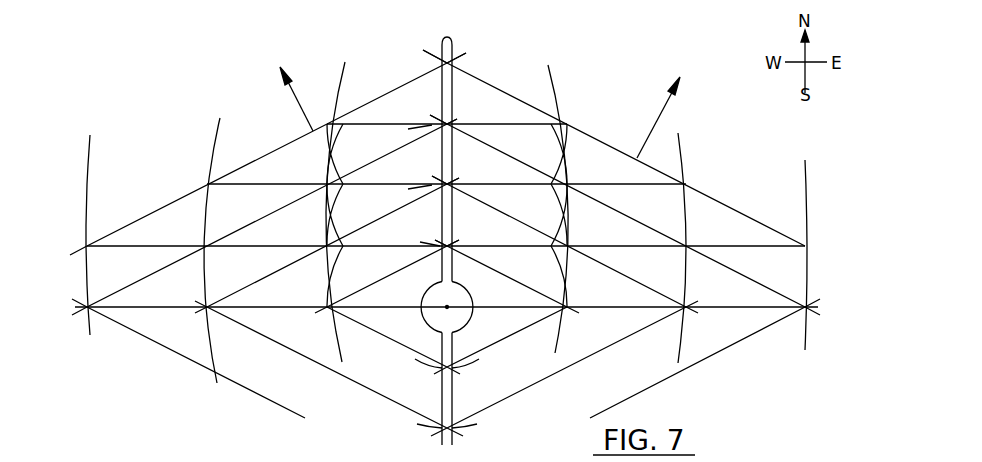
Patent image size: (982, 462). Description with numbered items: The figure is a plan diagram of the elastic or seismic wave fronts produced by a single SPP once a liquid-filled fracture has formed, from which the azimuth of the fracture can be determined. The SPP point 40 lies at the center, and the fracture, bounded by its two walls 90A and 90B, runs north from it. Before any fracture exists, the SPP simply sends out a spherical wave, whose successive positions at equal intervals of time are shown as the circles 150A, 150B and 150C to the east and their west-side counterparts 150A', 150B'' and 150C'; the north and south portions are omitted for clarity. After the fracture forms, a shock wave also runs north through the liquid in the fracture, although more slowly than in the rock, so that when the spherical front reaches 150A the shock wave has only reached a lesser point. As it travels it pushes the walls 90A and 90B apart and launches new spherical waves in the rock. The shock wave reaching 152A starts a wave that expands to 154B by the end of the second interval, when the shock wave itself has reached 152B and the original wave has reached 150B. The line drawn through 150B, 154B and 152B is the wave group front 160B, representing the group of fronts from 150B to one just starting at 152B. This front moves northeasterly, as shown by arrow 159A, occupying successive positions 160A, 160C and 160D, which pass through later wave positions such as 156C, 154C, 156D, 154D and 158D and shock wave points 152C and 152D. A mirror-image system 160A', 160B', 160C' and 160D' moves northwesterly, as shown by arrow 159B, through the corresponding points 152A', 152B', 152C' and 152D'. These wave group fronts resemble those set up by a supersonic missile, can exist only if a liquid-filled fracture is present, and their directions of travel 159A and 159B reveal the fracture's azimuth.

The SPP origin point 40 is at (446, 309).
The fracture wall 90A is at (462, 270).
The fracture wall 90B is at (432, 277).
The shock wave position 152A is at (486, 259).
The shock wave position (mirror image) 152A' is at (482, 233).
The shock wave position 152B is at (481, 195).
The shock wave position (mirror image) 152B' is at (481, 171).
The shock wave position 152C is at (479, 133).
The shock wave position (mirror image) 152C' is at (481, 111).
The shock wave position 152D is at (488, 55).
The shock wave position (mirror image) 152D' is at (406, 68).
The spherical wave front 150A is at (588, 330).
The spherical wave front 150B is at (711, 335).
The spherical wave front 150C is at (766, 344).
The spherical wave front (west) 150A' is at (308, 334).
The spherical wave front (west) 150B'' is at (251, 345).
The spherical wave front (west) 150C' is at (125, 255).
The secondary spherical wave front 154B is at (566, 236).
The secondary spherical wave front 154C is at (683, 237).
The secondary spherical wave front 154D is at (804, 176).
The secondary spherical wave front 156C is at (566, 172).
The secondary spherical wave front 156D is at (680, 143).
The secondary spherical wave front 158D is at (565, 98).
The wave group front 160A is at (534, 276).
The wave group front 160B is at (565, 244).
The wave group front 160C is at (625, 215).
The wave group front 160D is at (614, 148).
The wave group front (mirror image) 160A' is at (354, 276).
The wave group front (mirror image) 160B' is at (327, 245).
The wave group front (mirror image) 160C' is at (264, 217).
The wave group front (mirror image) 160D' is at (268, 154).
The direction-of-travel arrow 159A is at (662, 113).
The direction-of-travel arrow 159B is at (294, 101).